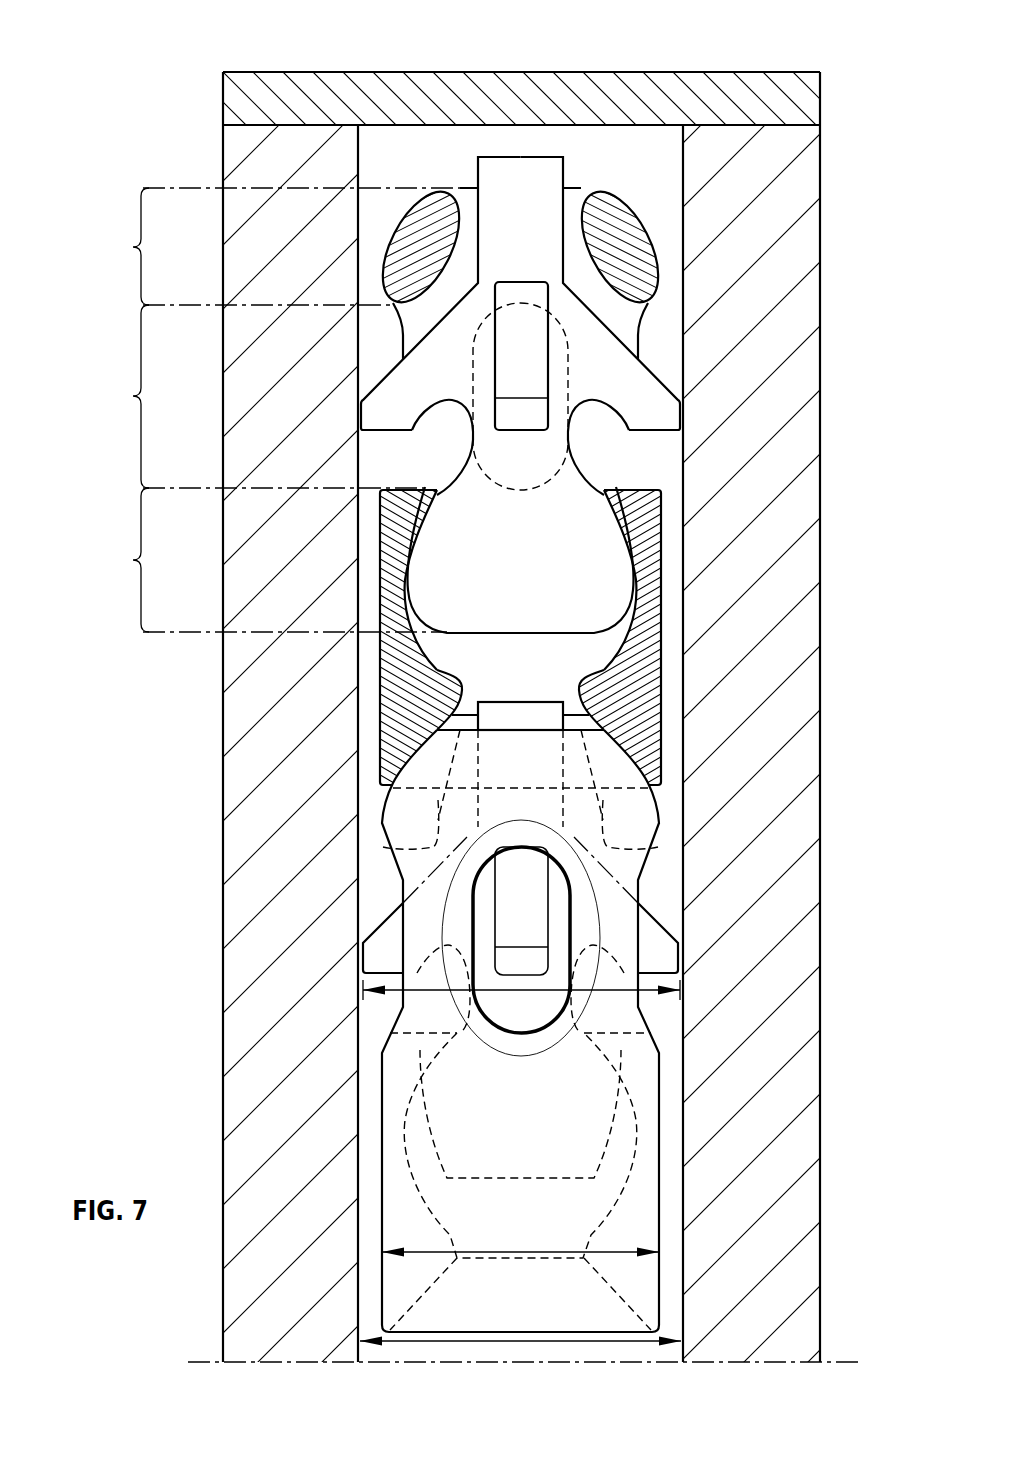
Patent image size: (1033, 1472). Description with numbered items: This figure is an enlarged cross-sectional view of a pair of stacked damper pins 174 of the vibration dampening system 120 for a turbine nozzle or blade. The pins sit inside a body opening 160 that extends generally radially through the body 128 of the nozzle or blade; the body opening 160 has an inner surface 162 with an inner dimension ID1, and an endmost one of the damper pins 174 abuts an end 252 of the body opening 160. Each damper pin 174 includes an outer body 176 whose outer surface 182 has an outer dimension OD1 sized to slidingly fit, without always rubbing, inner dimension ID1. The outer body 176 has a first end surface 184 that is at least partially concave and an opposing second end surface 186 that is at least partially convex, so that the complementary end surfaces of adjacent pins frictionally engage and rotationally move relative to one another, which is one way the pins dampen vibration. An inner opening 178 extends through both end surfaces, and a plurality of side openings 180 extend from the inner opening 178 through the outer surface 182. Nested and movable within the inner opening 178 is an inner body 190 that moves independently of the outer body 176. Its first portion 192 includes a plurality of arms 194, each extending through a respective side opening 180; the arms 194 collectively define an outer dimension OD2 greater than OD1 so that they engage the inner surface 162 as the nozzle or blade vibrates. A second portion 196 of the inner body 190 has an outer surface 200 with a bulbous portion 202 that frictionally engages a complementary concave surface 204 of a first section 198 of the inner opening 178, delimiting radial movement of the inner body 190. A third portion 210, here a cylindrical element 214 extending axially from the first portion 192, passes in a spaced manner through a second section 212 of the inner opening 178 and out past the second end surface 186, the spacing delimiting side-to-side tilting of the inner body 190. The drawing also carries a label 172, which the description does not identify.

The vibration dampening system 120 is at (658, 243).
The body 128 is at (747, 425).
The body opening 160 is at (670, 1273).
The inner surface 162 is at (668, 1306).
The housing wall 172 is at (348, 212).
The damper pin 174 is at (647, 702).
The outer body 176 is at (622, 660).
The inner opening 178 is at (577, 670).
The side openings 180 is at (437, 448).
The outer surface 182 is at (380, 713).
The first end surface 184 is at (617, 1333).
The second end surface 186 is at (627, 207).
The inner body 190 is at (470, 495).
The first portion 192 is at (255, 396).
The arms 194 is at (392, 387).
The second portion 196 is at (266, 560).
The first section 198 is at (400, 673).
The outer surface 200 is at (633, 538).
The bulbous portion 202 is at (660, 1087).
The concave surface 204 is at (455, 688).
The third portion 210 is at (281, 246).
The second section 212 is at (572, 210).
The cylindrical element 214 is at (520, 165).
The end 252 is at (667, 125).
The outer dimension OD1 is at (537, 1252).
The outer dimension OD2 is at (687, 1040).
The inner dimension ID1 is at (478, 1340).